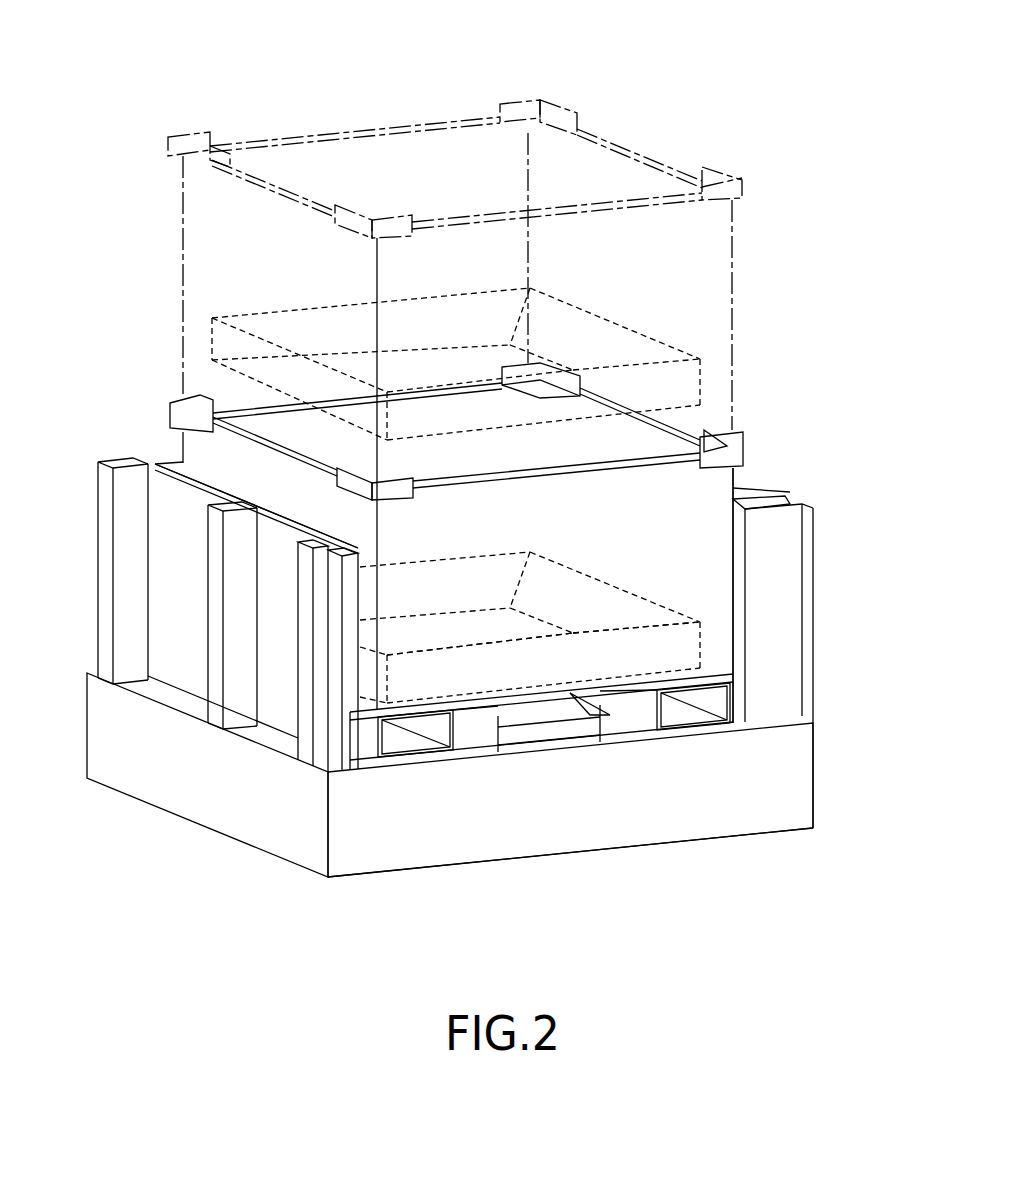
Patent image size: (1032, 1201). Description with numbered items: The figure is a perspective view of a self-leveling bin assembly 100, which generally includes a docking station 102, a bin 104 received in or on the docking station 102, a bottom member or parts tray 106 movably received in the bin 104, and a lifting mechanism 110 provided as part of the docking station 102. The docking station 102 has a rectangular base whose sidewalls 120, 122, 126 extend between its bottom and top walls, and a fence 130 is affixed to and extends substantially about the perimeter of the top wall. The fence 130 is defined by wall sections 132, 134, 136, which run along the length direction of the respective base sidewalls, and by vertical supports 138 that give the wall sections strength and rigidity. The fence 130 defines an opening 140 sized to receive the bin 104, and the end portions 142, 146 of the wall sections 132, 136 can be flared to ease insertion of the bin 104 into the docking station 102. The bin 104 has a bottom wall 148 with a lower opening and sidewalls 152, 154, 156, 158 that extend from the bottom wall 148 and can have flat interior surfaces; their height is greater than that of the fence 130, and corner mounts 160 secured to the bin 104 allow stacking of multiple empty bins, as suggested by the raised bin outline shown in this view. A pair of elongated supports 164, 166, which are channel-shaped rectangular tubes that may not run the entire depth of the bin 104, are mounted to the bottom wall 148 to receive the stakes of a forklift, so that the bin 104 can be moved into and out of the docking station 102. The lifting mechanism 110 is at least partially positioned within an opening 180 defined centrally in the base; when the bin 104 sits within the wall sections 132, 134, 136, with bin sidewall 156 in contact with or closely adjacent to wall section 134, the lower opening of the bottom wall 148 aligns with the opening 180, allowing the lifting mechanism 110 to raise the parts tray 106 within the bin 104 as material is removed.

The self-leveling bin assembly 100 is at (216, 108).
The docking station 102 is at (412, 855).
The bin 104 is at (628, 404).
The parts tray 106 is at (625, 665).
The lifting mechanism 110 is at (488, 727).
The sidewall 120 is at (740, 823).
The sidewall 122 is at (813, 785).
The sidewall 126 is at (275, 843).
The fence 130 is at (178, 673).
The wall section 132 is at (745, 488).
The wall section 134 is at (173, 460).
The wall section 136 is at (280, 716).
The vertical supports 138 is at (747, 500).
The opening 140 is at (549, 740).
The end portion 142 is at (795, 618).
The end portion 146 is at (358, 752).
The bottom wall 148 is at (593, 693).
The sidewall 152 is at (717, 575).
The sidewall 154 is at (600, 403).
The sidewall 156 is at (282, 430).
The sidewall 158 is at (230, 473).
The corner mounts 160 is at (532, 362).
The elongated support 164 is at (403, 745).
The elongated support 166 is at (695, 715).
The opening 180 is at (523, 725).